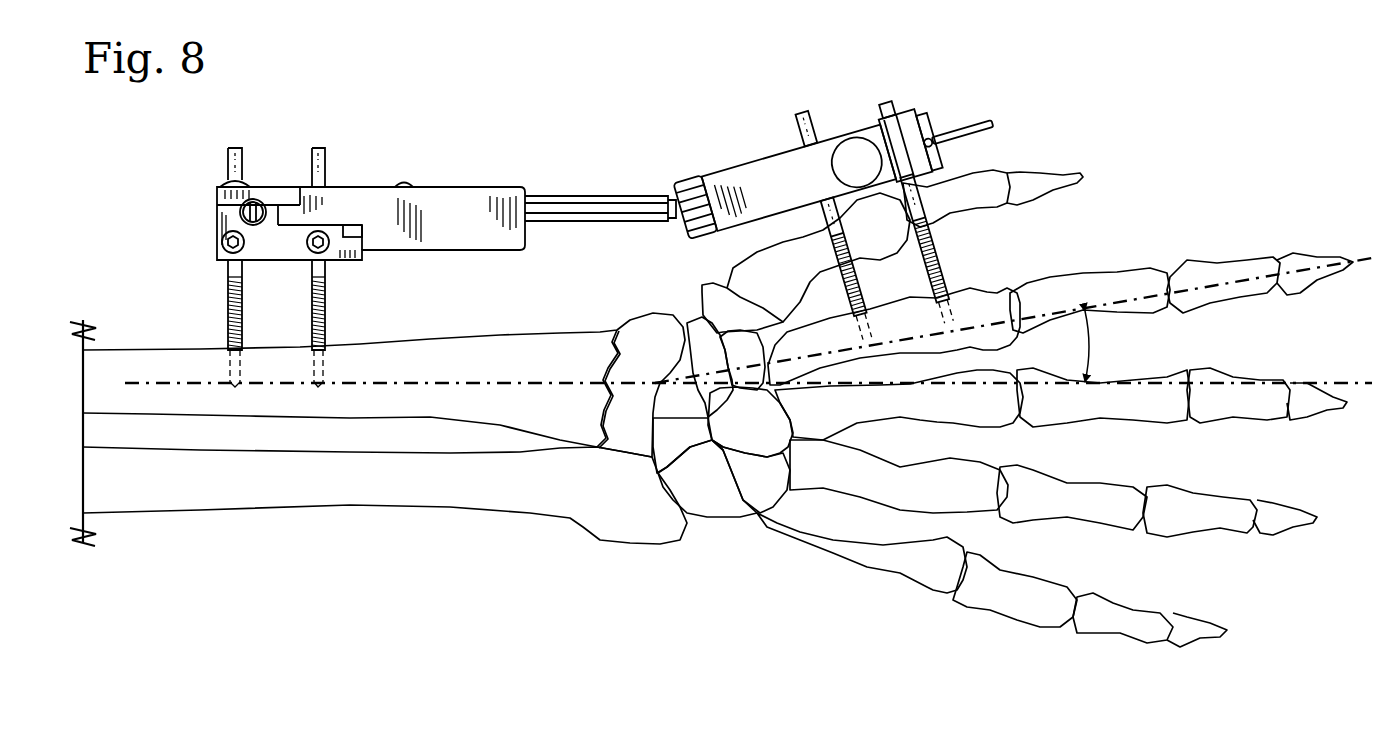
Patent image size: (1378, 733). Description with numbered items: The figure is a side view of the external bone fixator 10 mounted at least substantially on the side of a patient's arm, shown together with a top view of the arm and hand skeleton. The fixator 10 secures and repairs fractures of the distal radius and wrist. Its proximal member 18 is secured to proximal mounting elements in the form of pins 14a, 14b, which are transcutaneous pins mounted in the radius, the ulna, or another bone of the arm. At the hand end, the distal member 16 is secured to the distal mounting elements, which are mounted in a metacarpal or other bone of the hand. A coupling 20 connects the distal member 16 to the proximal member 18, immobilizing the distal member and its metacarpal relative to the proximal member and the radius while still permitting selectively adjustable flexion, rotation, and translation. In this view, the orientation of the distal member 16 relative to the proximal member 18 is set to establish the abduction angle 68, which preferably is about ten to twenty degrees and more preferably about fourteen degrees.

The external bone fixator 10 is at (630, 63).
The proximal mounting pin 14a is at (233, 147).
The proximal mounting pin 14b is at (318, 147).
The distal member 16 is at (972, 85).
The proximal member 18 is at (462, 135).
The coupling 20 is at (731, 110).
The abduction angle 68 is at (1092, 346).